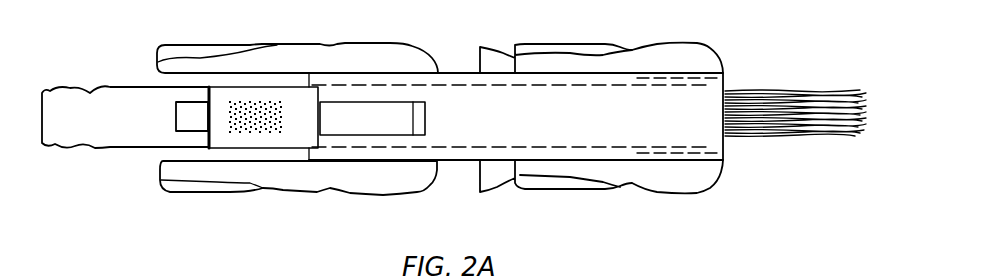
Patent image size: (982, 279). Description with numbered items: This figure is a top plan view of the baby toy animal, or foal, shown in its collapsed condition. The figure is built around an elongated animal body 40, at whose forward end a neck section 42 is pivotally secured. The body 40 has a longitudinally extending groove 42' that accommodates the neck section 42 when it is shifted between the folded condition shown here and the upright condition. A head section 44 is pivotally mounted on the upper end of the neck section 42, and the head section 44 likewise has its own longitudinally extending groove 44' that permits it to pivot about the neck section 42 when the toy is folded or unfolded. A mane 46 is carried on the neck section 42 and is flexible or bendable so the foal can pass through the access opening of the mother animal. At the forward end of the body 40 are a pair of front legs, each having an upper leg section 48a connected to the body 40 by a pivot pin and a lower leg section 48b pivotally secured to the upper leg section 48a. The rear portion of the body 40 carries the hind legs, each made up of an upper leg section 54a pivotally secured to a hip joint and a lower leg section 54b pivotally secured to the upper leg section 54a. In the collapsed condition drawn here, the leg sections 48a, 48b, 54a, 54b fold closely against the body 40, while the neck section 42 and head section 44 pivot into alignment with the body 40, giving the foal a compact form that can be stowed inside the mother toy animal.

The animal body 40 is at (452, 82).
The neck section 42 is at (277, 77).
The longitudinally extending groove 42' is at (372, 72).
The head section 44 is at (125, 92).
The longitudinally extending groove 44' is at (198, 69).
The mane 46 is at (257, 110).
The upper leg sections 48a is at (330, 182).
The lower leg sections 48b is at (208, 190).
The upper leg sections 54a is at (683, 52).
The lower leg sections 54b is at (502, 60).